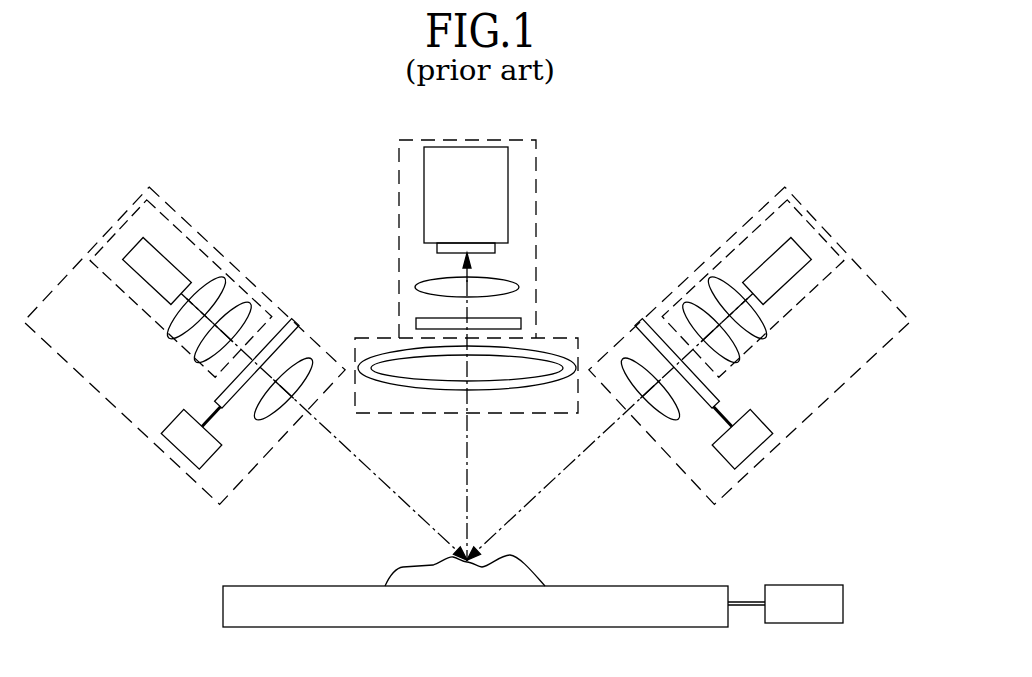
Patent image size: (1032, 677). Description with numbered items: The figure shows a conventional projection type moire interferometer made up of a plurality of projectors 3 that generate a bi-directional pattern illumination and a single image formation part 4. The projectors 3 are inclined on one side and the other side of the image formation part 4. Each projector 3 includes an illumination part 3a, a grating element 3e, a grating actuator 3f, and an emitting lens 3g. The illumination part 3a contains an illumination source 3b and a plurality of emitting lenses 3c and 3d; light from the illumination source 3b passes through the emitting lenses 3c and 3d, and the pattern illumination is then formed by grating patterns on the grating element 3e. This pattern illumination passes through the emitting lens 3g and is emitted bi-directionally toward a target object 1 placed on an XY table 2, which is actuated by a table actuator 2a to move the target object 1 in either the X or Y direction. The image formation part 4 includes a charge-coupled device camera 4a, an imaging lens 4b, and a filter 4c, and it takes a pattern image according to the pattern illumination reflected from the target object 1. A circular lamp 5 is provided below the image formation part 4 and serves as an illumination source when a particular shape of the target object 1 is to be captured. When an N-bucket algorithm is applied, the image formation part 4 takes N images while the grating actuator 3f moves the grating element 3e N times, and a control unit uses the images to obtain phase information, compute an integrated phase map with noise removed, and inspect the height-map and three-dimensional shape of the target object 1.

The target object 1 is at (405, 570).
The XY table 2 is at (227, 607).
The table actuator 2a is at (830, 602).
The projector 3 is at (208, 228).
The illumination part 3a is at (132, 320).
The illumination source 3b is at (137, 275).
The emitting lens 3c is at (170, 336).
The emitting lens 3d is at (193, 363).
The grating element 3e is at (292, 325).
The grating actuator 3f is at (165, 438).
The emitting lens 3g is at (267, 418).
The image formation part 4 is at (390, 157).
The charge-coupled device (CCD) camera 4a is at (430, 207).
The imaging lens 4b is at (415, 285).
The filter 4c is at (416, 321).
The circular lamp 5 is at (432, 383).